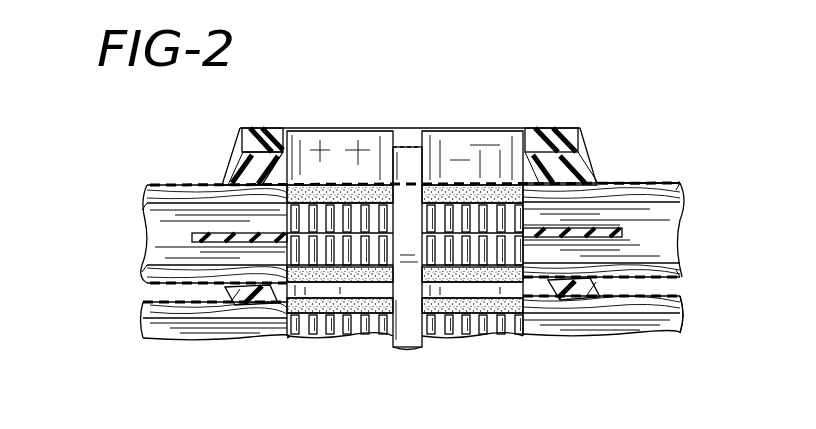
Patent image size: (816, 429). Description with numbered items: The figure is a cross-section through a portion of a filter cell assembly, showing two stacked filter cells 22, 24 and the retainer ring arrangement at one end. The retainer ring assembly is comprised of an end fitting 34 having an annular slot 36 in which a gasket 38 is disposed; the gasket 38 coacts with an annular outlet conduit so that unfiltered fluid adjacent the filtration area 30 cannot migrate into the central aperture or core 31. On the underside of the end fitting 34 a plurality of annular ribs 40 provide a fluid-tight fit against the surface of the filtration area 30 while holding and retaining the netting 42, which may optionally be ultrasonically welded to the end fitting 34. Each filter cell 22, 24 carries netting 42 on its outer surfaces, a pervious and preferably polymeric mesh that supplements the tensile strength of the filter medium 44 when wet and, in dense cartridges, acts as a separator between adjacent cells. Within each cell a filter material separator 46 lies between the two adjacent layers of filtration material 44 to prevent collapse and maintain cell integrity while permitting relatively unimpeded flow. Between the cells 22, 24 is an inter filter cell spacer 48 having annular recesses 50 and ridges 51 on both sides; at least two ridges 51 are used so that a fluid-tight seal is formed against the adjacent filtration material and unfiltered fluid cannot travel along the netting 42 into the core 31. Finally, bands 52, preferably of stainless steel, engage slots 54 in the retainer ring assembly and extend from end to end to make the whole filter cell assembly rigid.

The filter cell 22 is at (108, 245).
The filter cell 24 is at (140, 350).
The filtration area 30 is at (140, 184).
The central aperture or core 31 is at (358, 138).
The end fitting 34 is at (238, 136).
The annular slot 36 is at (244, 128).
The gasket 38 is at (276, 128).
The annular ribs 40 is at (590, 180).
The netting 42 is at (660, 180).
The filter medium 44 is at (680, 192).
The filter material separator 46 is at (615, 216).
The inter filter cell spacer 48 is at (620, 292).
The annular recesses 50 is at (575, 300).
The ridges 51 is at (253, 294).
The bands 52 is at (422, 156).
The slots 54 is at (393, 148).